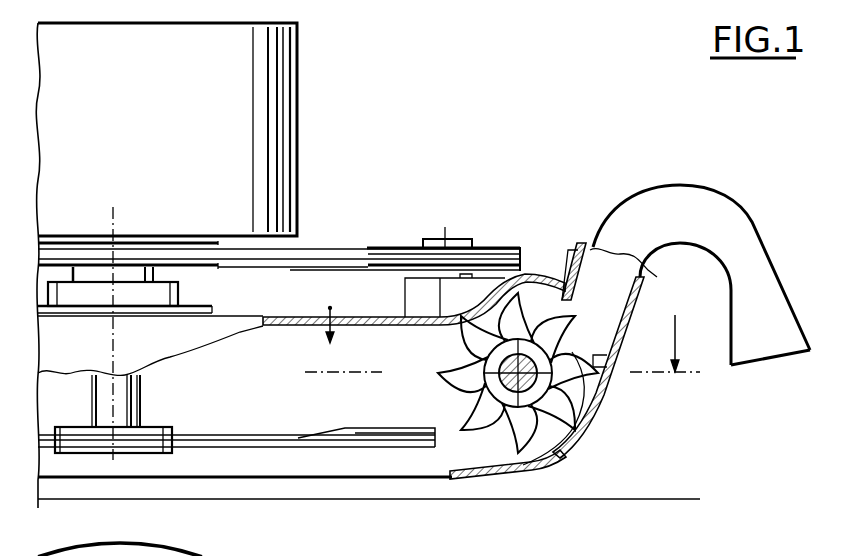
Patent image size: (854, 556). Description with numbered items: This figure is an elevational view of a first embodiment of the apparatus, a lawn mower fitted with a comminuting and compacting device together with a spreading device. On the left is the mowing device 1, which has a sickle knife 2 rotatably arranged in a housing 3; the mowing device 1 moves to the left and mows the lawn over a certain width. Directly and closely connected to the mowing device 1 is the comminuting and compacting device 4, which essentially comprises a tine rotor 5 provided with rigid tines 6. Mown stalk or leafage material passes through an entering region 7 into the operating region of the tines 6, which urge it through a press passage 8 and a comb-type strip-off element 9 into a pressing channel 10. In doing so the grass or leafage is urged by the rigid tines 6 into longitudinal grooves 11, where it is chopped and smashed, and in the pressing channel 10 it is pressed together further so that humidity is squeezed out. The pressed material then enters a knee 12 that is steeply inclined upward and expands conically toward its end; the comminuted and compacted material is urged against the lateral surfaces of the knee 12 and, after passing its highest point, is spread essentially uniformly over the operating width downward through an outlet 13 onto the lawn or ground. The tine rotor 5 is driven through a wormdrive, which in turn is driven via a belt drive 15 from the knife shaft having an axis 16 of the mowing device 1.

The mowing device 1 is at (253, 452).
The sickle knife 2 is at (360, 448).
The housing 3 is at (415, 460).
The comminuting and compacting device 4 is at (560, 288).
The tine rotor 5 is at (510, 408).
The rigid tines 6 is at (540, 440).
The entering region 7 is at (465, 460).
The press passage 8 is at (580, 457).
The comb-type strip-off element 9 is at (566, 290).
The pressing channel 10 is at (620, 288).
The longitudinal grooves 11 is at (607, 410).
The knee 12 is at (683, 202).
The outlet 13 is at (765, 348).
The belt drive 15 is at (343, 247).
The axis 16 is at (120, 398).